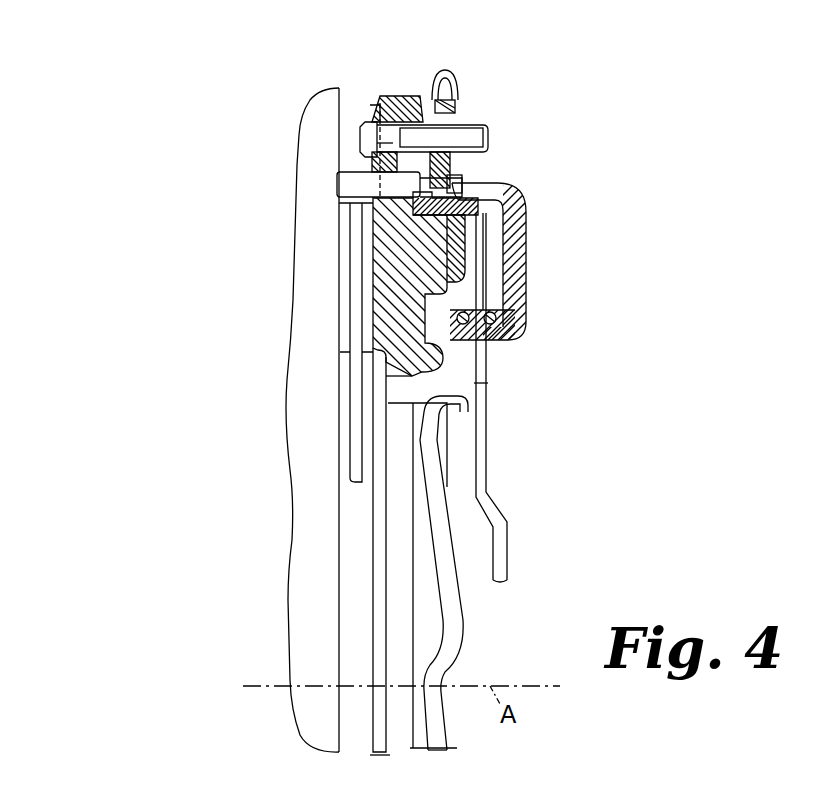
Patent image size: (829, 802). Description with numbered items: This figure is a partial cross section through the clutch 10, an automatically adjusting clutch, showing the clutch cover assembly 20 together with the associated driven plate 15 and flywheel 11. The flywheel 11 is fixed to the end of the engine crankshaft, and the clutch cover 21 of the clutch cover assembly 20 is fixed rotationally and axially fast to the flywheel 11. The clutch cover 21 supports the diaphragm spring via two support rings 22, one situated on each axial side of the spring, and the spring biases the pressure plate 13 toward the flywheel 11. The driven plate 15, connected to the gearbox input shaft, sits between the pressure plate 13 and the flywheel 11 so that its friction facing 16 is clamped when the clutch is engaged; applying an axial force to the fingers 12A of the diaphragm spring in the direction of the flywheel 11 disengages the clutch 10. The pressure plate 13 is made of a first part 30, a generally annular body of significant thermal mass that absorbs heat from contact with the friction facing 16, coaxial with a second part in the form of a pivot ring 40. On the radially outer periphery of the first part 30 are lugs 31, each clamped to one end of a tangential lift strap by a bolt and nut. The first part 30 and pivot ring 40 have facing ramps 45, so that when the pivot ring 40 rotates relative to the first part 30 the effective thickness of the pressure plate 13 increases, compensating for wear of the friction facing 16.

The clutch 10 is at (528, 240).
The flywheel 11 is at (305, 218).
The fingers 12A is at (514, 546).
The pressure plate 13 is at (385, 226).
The driven plate 15 is at (357, 313).
The friction facing 16 is at (345, 300).
The clutch cover assembly 20 is at (525, 217).
The clutch cover 21 is at (520, 293).
The support rings 22 is at (485, 340).
The first part 30 is at (380, 277).
The lugs 31 is at (388, 96).
The pivot ring 40 is at (485, 198).
The ramps 45 is at (503, 272).